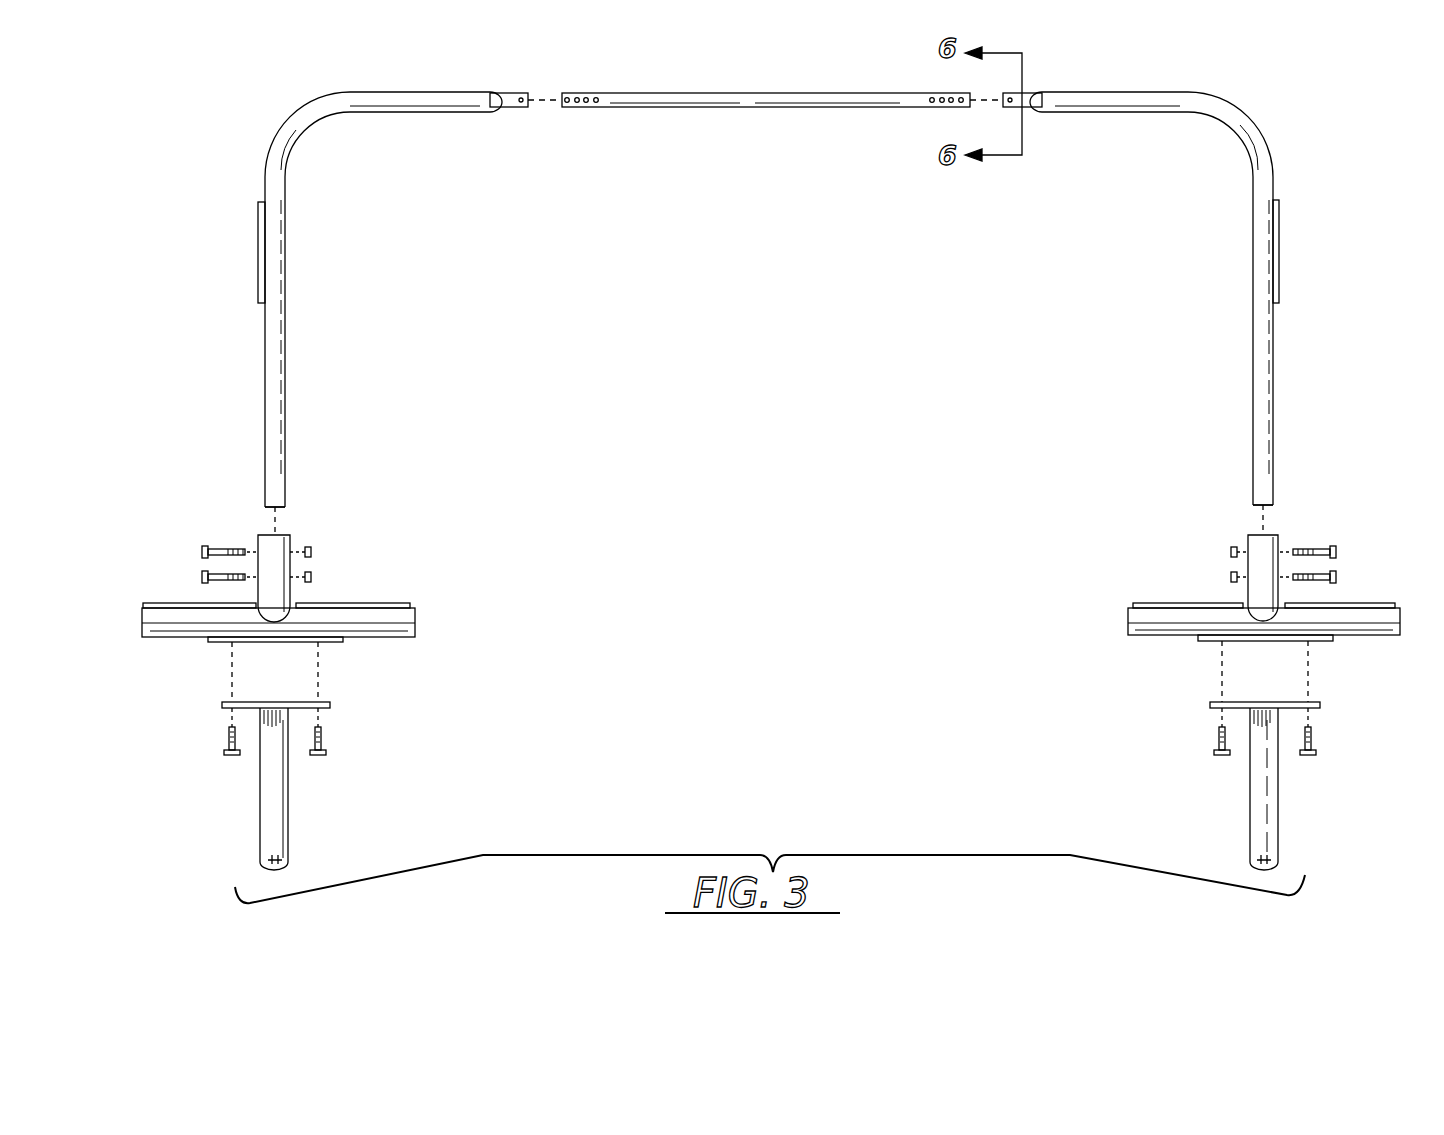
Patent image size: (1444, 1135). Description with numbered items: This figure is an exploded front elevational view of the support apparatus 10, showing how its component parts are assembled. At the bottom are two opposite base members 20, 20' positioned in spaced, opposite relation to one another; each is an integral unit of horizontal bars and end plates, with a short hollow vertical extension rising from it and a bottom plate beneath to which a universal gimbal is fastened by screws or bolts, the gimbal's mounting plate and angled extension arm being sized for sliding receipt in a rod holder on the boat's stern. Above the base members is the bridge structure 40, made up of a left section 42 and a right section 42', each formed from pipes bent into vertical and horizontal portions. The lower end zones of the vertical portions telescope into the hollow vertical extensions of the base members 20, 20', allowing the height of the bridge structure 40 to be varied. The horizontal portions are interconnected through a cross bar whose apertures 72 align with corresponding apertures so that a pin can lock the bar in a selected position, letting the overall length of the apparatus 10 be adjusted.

The support apparatus 10 is at (748, 73).
The base member 20 is at (312, 680).
The base member 20' is at (1266, 680).
The bridge structure 40 is at (1182, 276).
The left section 42 is at (322, 169).
The right section 42' is at (1301, 238).
The aperture 72 is at (586, 96).